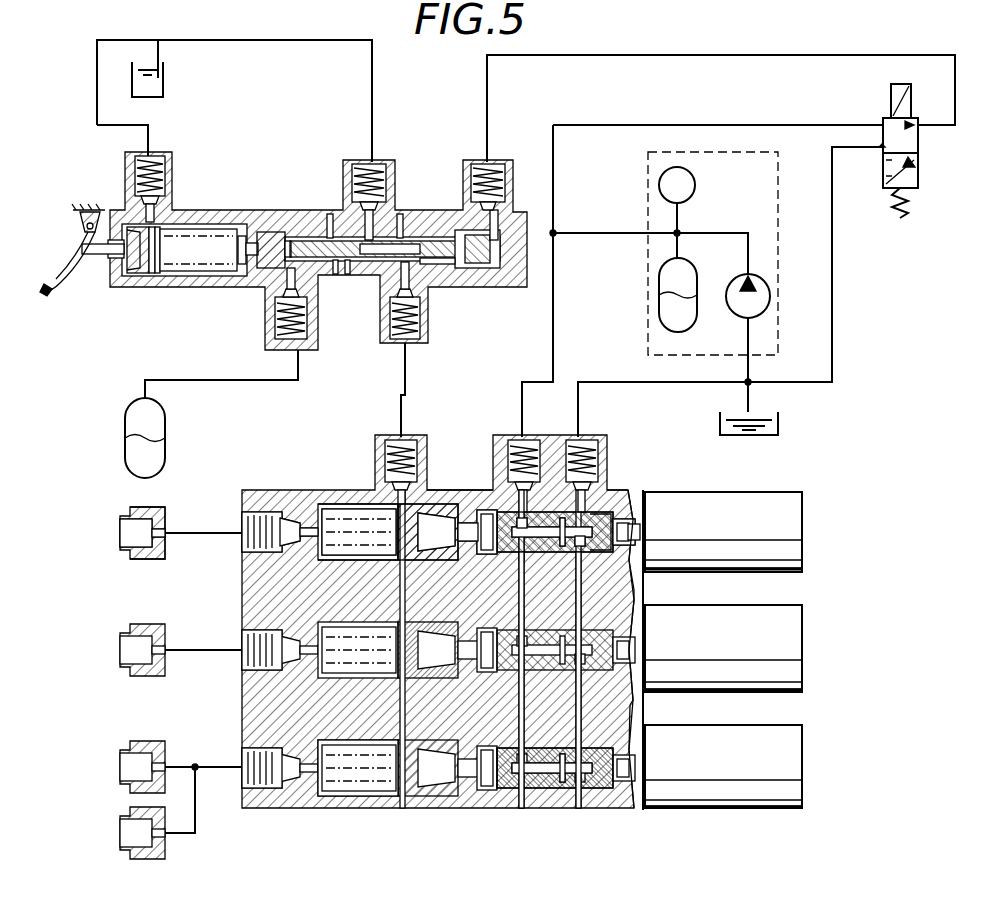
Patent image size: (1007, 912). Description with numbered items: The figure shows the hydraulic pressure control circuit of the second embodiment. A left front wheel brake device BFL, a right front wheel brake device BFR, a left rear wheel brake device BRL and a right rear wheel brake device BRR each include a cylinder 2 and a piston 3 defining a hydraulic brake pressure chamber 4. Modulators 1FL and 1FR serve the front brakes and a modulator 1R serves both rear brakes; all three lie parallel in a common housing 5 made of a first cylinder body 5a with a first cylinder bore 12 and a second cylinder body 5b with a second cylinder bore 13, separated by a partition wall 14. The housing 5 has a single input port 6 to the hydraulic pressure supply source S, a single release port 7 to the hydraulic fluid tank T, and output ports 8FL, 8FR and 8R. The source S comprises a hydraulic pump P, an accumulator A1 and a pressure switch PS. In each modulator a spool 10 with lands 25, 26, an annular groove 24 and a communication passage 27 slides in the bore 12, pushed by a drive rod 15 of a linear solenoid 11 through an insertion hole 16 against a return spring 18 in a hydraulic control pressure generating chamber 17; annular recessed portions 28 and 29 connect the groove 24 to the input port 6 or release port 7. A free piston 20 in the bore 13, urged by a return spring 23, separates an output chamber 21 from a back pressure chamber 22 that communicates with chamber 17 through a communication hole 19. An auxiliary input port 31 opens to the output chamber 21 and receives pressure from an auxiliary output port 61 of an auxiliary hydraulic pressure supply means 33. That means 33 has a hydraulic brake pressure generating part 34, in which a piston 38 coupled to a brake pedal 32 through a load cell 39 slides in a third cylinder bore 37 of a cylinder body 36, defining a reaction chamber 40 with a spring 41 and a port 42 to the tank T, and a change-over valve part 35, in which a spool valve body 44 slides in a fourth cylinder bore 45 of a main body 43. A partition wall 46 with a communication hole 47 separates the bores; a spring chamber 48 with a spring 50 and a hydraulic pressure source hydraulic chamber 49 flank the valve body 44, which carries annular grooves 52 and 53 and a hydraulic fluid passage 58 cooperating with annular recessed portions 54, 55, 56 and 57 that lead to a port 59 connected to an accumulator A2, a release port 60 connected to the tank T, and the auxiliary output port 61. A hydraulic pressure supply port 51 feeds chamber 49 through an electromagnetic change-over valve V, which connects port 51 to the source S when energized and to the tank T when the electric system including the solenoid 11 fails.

The modulator 1FL is at (630, 497).
The modulator 1FR is at (628, 612).
The modulator 1R is at (605, 808).
The cylinder 2 is at (152, 507).
The piston 3 is at (148, 548).
The hydraulic brake pressure chamber 4 is at (167, 523).
The housing 5 is at (438, 658).
The first cylinder body 5a is at (552, 796).
The second cylinder body 5b is at (362, 808).
The input port 6 is at (526, 442).
The release port 7 is at (586, 442).
The output port 8FL is at (242, 548).
The output port 8FR is at (242, 666).
The output port 8R is at (242, 782).
The spool 10 is at (554, 646).
The linear solenoid 11 is at (712, 534).
The first cylinder bore 12 is at (600, 555).
The second cylinder bore 13 is at (368, 562).
The partition wall 14 is at (452, 560).
The drive rod 15 is at (636, 530).
The insertion hole 16 is at (642, 544).
The hydraulic control pressure generating chamber 17 is at (486, 556).
The return spring 18 is at (480, 522).
The communication hole 19 is at (448, 504).
The free piston 20 is at (367, 547).
The output chamber 21 is at (340, 512).
The back pressure chamber 22 is at (429, 553).
The return spring 23 is at (308, 548).
The annular groove 24 is at (572, 560).
The land 25 is at (610, 505).
The land 26 is at (527, 556).
The communication passage 27 is at (512, 555).
The annular recessed portion 28 is at (519, 520).
The annular recessed portion 29 is at (570, 518).
The auxiliary input port 31 is at (410, 442).
The brake pedal 32 is at (70, 268).
The auxiliary hydraulic pressure supply means 33 is at (203, 142).
The hydraulic brake pressure generating part 34 is at (190, 208).
The change-over valve part 35 is at (312, 208).
The cylinder body 36 is at (153, 285).
The third cylinder bore 37 is at (172, 285).
The piston 38 is at (140, 285).
The load cell 39 is at (110, 266).
The reaction chamber 40 is at (184, 262).
The spring 41 is at (140, 230).
The port 42 is at (150, 162).
The main body 43 is at (417, 236).
The spool valve body 44 is at (425, 272).
The fourth cylinder bore 45 is at (346, 275).
The partition wall 46 is at (238, 270).
The communication hole 47 is at (240, 245).
The spring chamber 48 is at (272, 238).
The hydraulic pressure source hydraulic chamber 49 is at (490, 262).
The spring 50 is at (262, 268).
The hydraulic pressure supply port 51 is at (496, 186).
The annular groove 52 is at (328, 236).
The annular groove 53 is at (433, 240).
The annular recessed portion 54 is at (331, 262).
The annular recessed portion 55 is at (398, 212).
The annular recessed portion 56 is at (398, 258).
The annular recessed portion 57 is at (472, 270).
The hydraulic fluid passage 58 is at (538, 228).
The port 59 is at (298, 345).
The release port 60 is at (380, 162).
The auxiliary output port 61 is at (412, 338).
The accumulator A1 is at (697, 268).
The accumulator A2 is at (165, 436).
The left front wheel brake device BFL is at (128, 532).
The right front wheel brake device BFR is at (120, 672).
The left rear wheel brake device BRL is at (114, 776).
The right rear wheel brake device BRR is at (114, 838).
The hydraulic pump P is at (740, 309).
The pressure switch PS is at (695, 188).
The hydraulic pressure supply source S is at (648, 178).
The hydraulic fluid tank T is at (165, 78).
The electromagnetic change-over valve V is at (917, 165).